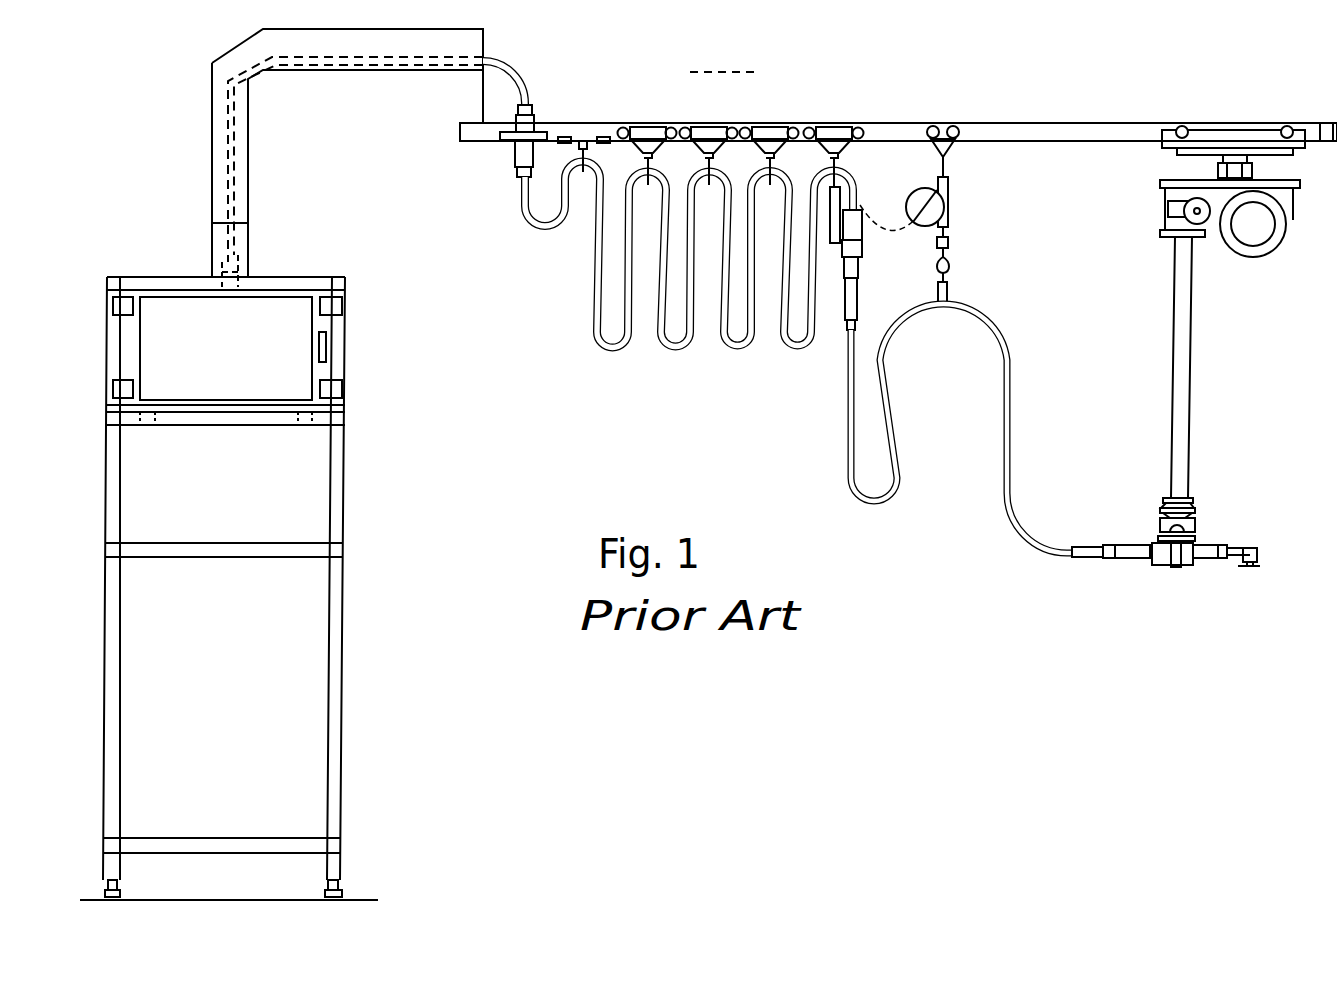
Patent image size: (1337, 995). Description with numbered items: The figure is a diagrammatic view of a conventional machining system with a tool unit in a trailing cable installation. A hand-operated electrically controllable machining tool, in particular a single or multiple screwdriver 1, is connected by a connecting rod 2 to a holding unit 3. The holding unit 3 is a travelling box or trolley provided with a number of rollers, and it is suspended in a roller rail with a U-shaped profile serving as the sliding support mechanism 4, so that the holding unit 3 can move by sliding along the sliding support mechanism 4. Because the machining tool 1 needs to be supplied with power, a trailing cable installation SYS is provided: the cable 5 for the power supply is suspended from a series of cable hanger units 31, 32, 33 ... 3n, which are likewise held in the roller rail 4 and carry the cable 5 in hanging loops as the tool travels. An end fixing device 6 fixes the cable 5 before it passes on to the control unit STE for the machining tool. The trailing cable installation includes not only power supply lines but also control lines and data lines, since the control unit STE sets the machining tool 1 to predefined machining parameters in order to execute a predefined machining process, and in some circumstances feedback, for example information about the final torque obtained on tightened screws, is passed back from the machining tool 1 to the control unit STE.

The machining tool 1 is at (1133, 553).
The connecting rod 2 is at (1185, 393).
The holding unit 3 is at (1169, 162).
The cable hanger unit 31 is at (945, 123).
The cable hanger unit 32 is at (836, 129).
The cable hanger unit 33 is at (770, 128).
The cable hanger unit 3n is at (648, 125).
The sliding support mechanism 4 is at (1058, 123).
The cable 5 is at (1010, 357).
The end fixing device 6 is at (533, 112).
The control unit STE is at (339, 483).
The cable system SYS is at (707, 385).